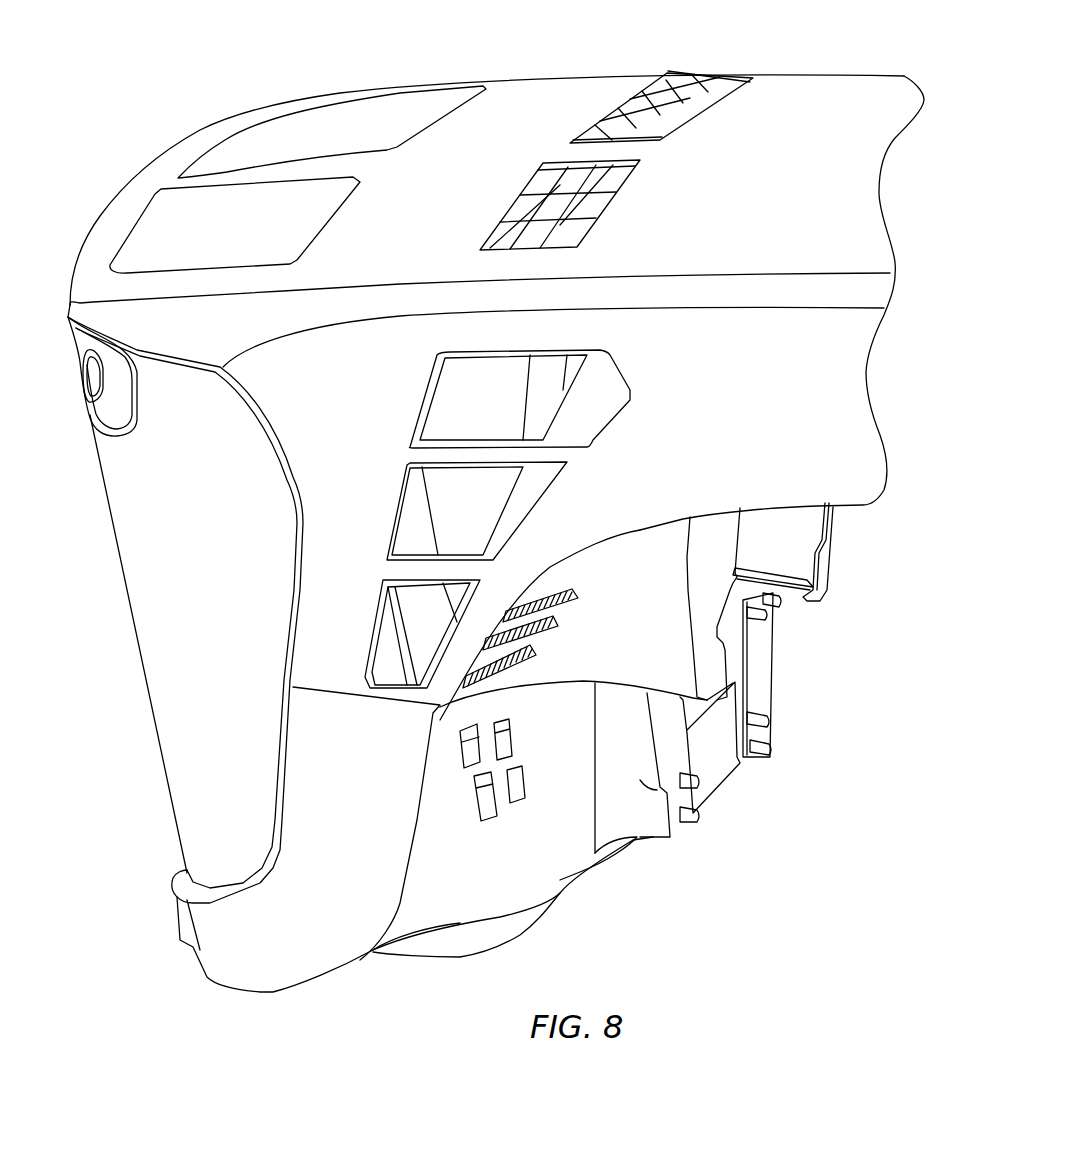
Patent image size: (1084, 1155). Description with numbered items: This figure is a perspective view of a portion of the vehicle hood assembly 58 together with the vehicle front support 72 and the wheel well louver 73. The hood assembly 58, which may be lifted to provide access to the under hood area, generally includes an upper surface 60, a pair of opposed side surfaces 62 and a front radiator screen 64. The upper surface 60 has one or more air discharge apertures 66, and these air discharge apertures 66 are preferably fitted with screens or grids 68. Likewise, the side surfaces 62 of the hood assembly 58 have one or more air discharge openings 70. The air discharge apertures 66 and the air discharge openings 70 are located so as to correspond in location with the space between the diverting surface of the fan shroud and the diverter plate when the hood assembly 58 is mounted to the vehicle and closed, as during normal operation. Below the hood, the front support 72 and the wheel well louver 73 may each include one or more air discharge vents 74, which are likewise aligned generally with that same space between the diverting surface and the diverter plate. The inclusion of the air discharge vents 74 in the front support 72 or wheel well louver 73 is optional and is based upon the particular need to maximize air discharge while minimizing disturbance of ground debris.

The hood assembly 58 is at (170, 122).
The upper surface 60 is at (568, 105).
The side surfaces 62 is at (835, 405).
The front radiator screen 64 is at (160, 692).
The air discharge apertures 66 is at (613, 180).
The screens or grids 68 is at (580, 237).
The air discharge openings 70 is at (447, 373).
The vehicle front support 72 is at (555, 868).
The wheel well louver 73 is at (655, 614).
The air discharge vents 74 is at (520, 660).